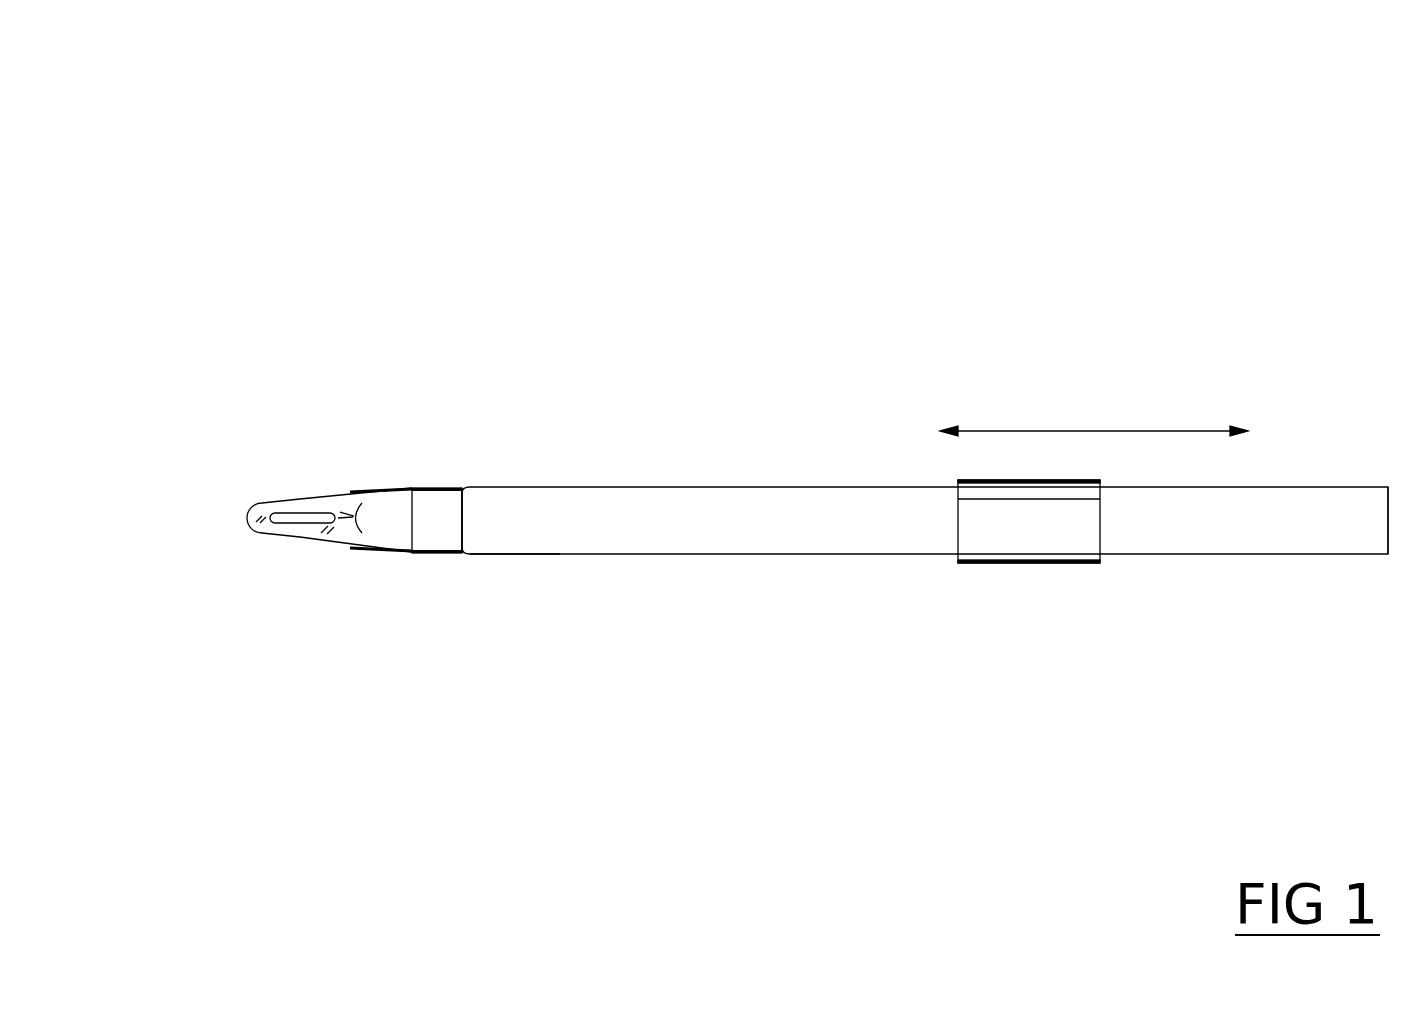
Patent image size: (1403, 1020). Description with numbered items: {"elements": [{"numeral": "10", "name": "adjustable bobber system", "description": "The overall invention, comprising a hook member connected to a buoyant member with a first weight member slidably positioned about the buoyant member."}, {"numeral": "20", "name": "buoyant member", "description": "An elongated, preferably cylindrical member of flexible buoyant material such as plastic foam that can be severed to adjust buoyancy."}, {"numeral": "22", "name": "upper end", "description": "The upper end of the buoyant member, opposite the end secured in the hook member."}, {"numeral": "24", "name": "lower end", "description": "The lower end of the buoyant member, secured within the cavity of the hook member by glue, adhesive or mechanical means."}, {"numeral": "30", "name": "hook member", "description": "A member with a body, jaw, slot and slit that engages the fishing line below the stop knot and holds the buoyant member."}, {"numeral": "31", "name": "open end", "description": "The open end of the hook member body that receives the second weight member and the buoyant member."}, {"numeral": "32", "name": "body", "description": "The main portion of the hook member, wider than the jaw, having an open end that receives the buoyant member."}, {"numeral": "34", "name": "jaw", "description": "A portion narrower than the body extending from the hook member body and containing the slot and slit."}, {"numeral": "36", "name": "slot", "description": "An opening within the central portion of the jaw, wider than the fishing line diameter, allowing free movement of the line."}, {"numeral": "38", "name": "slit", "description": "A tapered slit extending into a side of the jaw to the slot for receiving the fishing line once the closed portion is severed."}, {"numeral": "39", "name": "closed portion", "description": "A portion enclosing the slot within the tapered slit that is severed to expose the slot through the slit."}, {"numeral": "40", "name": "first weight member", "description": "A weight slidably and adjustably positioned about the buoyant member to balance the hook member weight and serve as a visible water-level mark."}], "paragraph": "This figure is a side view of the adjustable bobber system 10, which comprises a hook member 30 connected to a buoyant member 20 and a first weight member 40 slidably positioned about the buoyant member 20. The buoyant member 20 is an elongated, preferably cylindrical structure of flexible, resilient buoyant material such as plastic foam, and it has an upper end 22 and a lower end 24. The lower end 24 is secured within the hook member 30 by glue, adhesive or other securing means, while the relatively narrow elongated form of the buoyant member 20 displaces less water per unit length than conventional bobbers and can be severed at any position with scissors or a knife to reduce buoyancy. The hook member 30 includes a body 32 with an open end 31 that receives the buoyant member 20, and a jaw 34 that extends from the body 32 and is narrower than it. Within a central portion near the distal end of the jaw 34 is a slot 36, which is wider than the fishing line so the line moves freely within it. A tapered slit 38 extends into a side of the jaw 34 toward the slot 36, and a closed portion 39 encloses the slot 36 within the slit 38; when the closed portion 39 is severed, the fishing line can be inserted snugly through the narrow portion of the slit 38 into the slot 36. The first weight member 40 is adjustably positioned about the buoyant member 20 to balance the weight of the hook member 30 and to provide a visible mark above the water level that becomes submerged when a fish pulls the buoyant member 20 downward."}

The surgical instrument 10 is at (1099, 211).
The tubular shaft 20 is at (716, 487).
The proximal end of shaft 22 is at (1350, 540).
The distal portion of shaft 24 is at (515, 547).
The tip assembly 30 is at (322, 490).
The junction of tip and shaft 31 is at (463, 522).
The hub connector 32 is at (407, 550).
The slot 34 is at (285, 533).
The rounded distal end 36 is at (254, 528).
The cutting edge 38 is at (313, 537).
The opening 39 is at (310, 527).
The sliding collar 40 is at (1053, 540).